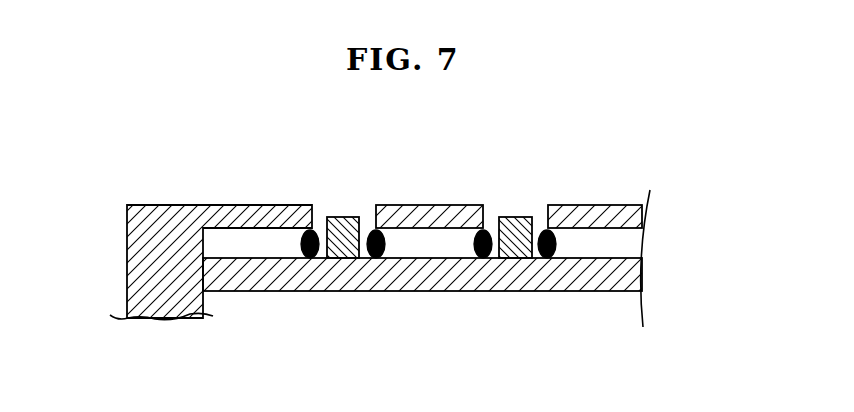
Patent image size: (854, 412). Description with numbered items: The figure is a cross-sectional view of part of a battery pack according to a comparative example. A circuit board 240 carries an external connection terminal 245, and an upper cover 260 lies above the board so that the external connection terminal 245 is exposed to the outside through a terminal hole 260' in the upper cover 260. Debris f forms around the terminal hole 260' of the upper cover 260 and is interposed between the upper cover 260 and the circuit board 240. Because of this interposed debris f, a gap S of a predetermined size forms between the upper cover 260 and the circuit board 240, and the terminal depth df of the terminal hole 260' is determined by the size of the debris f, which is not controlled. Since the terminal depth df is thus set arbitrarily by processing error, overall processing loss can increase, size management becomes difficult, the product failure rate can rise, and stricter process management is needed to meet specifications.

The upper cover 260 is at (177, 262).
The terminal hole 260' is at (509, 184).
The circuit board 240 is at (622, 276).
The external connection terminal 245 is at (513, 225).
The debris f is at (555, 232).
The gap S is at (257, 228).
The terminal depth df is at (343, 229).